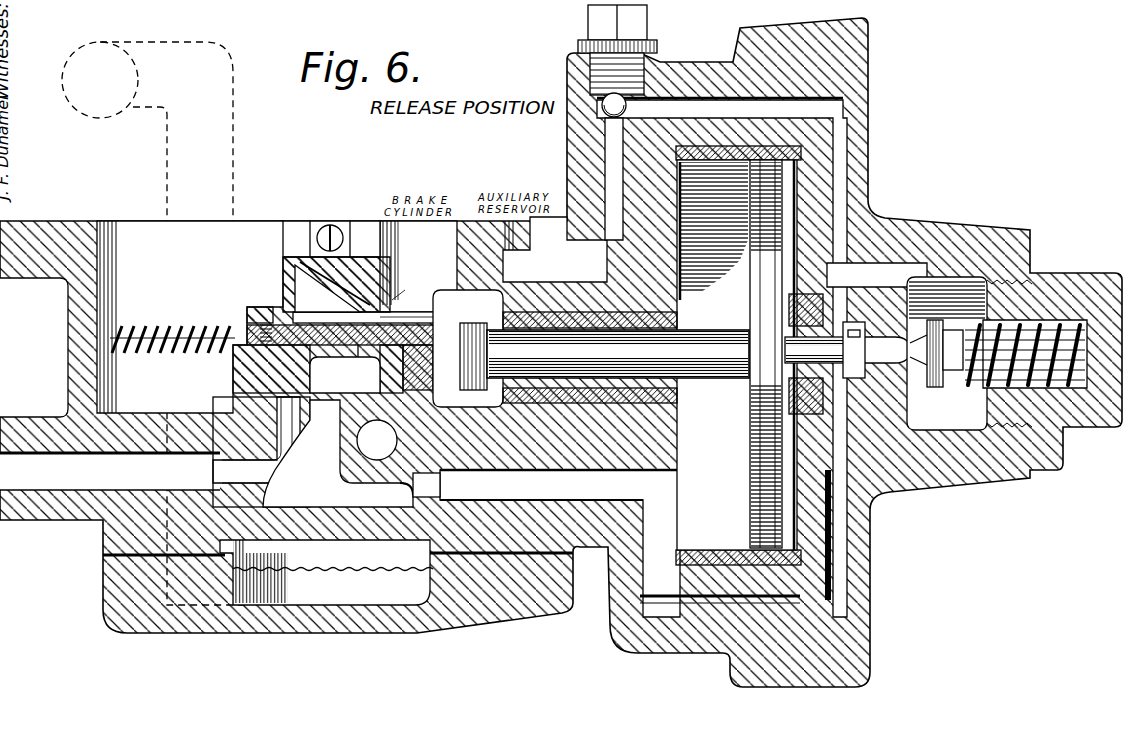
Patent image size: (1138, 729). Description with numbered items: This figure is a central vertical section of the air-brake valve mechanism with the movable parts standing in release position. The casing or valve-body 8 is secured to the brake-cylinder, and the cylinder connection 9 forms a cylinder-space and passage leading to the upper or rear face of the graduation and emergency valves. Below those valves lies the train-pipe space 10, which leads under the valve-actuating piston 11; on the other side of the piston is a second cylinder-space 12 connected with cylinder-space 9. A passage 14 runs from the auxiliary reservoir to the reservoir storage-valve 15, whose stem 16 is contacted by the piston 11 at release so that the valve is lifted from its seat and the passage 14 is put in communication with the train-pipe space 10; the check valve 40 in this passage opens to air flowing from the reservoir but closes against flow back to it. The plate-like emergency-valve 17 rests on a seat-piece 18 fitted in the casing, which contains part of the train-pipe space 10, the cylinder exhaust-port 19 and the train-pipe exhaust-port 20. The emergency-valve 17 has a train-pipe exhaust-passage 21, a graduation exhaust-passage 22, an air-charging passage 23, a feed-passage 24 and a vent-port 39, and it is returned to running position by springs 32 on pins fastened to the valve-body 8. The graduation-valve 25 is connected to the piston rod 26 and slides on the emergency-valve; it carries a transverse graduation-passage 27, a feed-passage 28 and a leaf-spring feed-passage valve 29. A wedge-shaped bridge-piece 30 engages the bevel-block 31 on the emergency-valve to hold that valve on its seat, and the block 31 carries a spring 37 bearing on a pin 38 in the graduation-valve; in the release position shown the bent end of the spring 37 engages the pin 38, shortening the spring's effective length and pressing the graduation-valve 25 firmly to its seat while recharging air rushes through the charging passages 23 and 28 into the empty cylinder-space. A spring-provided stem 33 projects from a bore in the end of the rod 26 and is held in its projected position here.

The valve-body 8 is at (561, 352).
The cylinder-space 9 is at (190, 317).
The train-pipe space 10 is at (531, 508).
The valve-actuating piston 11 is at (762, 456).
The cylinder-space 12 is at (833, 512).
The passage or port 14 is at (740, 356).
The reservoir storage-valve 15 is at (933, 385).
The stem 16 is at (848, 365).
The emergency-valve 17 is at (247, 380).
The seat-piece 18 is at (402, 470).
The cylinder exhaust-port 19 is at (377, 440).
The train-pipe exhaust-port 20 is at (232, 473).
The train-pipe exhaust-passage 21 is at (330, 380).
The graduation exhaust-passage 22 is at (402, 386).
The air-charging passage 23 is at (345, 375).
The feed-passage 24 is at (340, 363).
The graduation-valve 25 is at (420, 312).
The piston rod or stem 26 is at (707, 378).
The graduation-passage 27 is at (430, 325).
The feed-passage 28 is at (410, 290).
The feed-passage valve 29 is at (290, 300).
The wedge-shaped bridge-piece 30 is at (360, 267).
The bevel-block 31 is at (300, 272).
The springs 32 is at (180, 356).
The spring-provided stem 33 is at (470, 386).
The spring 37 is at (413, 260).
The cross-bar or pin 38 is at (406, 281).
The vent-port 39 is at (427, 485).
The retaining or check valve 40 is at (603, 107).